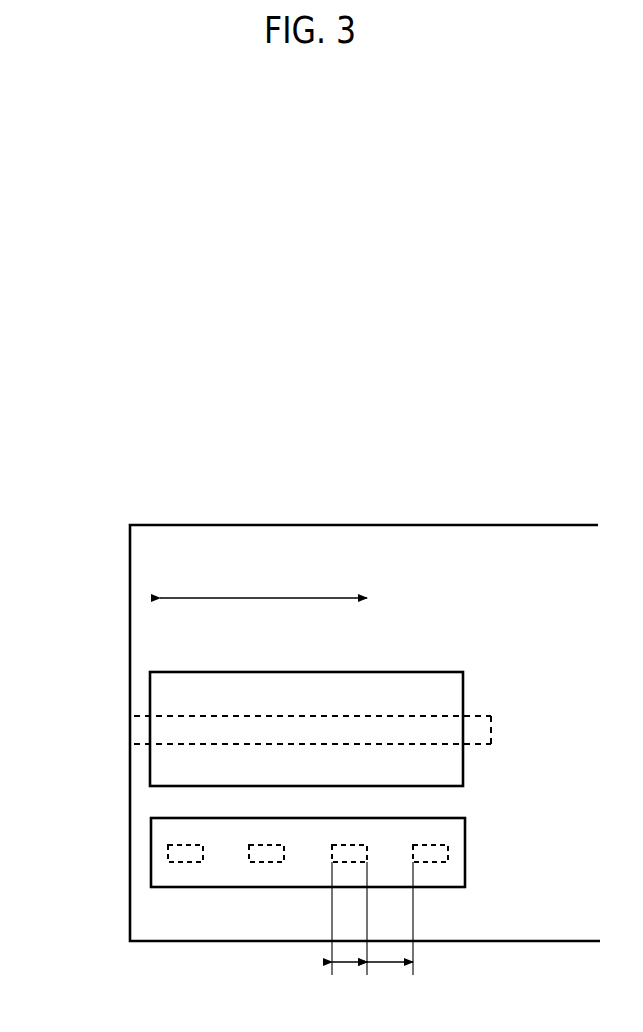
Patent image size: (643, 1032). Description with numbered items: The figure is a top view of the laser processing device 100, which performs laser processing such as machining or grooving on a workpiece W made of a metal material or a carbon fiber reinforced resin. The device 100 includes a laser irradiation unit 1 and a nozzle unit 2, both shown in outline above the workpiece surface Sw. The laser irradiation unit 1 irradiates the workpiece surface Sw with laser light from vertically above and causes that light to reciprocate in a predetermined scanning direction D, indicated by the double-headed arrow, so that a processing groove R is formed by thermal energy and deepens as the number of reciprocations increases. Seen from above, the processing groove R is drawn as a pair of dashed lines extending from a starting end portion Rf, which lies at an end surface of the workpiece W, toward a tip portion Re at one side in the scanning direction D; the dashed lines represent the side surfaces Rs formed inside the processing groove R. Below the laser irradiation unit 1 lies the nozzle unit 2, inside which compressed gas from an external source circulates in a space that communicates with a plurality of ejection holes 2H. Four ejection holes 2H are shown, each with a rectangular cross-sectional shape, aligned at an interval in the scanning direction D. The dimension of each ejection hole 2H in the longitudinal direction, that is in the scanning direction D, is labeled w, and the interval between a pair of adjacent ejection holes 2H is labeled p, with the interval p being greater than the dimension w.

The laser processing device 100 is at (60, 458).
The workpiece W is at (252, 547).
The workpiece surface Sw is at (449, 550).
The scanning direction D is at (263, 618).
The laser irradiation unit 1 is at (148, 679).
The starting end portion Rf is at (130, 716).
The tip portion Re is at (491, 717).
The processing groove R is at (494, 722).
The side surface Rs is at (370, 716).
The nozzle unit 2 is at (150, 842).
The ejection holes 2H is at (272, 862).
The dimension of the ejection holes in the longitudinal direction w is at (349, 929).
The interval between adjacent ejection holes p is at (390, 929).